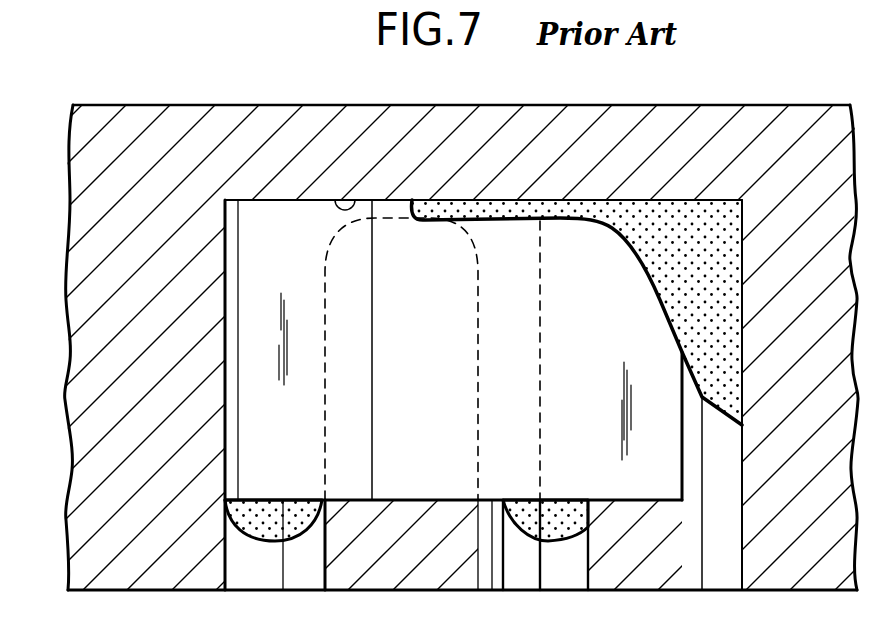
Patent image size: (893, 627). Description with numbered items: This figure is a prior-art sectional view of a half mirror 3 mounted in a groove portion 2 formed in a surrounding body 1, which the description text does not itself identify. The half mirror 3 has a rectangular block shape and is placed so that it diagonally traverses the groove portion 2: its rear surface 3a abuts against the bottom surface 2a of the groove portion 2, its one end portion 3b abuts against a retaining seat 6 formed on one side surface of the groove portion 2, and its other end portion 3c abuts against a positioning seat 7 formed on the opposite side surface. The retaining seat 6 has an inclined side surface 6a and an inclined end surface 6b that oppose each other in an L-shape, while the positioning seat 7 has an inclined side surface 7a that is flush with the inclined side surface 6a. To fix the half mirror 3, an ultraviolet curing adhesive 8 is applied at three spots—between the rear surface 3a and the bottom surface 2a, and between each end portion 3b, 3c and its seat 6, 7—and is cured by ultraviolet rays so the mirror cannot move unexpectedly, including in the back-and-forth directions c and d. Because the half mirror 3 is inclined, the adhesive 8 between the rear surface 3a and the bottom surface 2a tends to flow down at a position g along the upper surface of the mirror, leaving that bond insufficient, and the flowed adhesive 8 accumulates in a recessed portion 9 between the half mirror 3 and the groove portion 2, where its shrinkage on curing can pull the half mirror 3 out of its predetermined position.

The housing block 1 is at (240, 128).
The groove portion 2 is at (397, 515).
The bottom surface of the groove portion 2a is at (348, 200).
The half mirror 3 is at (630, 502).
The rear surface of the half mirror 3a is at (268, 189).
The one end portion of the half mirror 3b is at (693, 467).
The other end portion of the half mirror 3c is at (238, 357).
The retaining seat 6 is at (426, 522).
The inclined side surface of the retaining seat 6a is at (517, 540).
The inclined end surface of the retaining seat 6b is at (603, 563).
The positioning seat 7 is at (328, 564).
The inclined side surface of the positioning seat 7a is at (325, 537).
The ultraviolet curing adhesive 8 is at (653, 267).
The recessed portion 9 is at (736, 243).
The position where adhesive flows down g is at (610, 210).
The back-and-forth direction c is at (405, 418).
The back-and-forth direction d is at (405, 422).